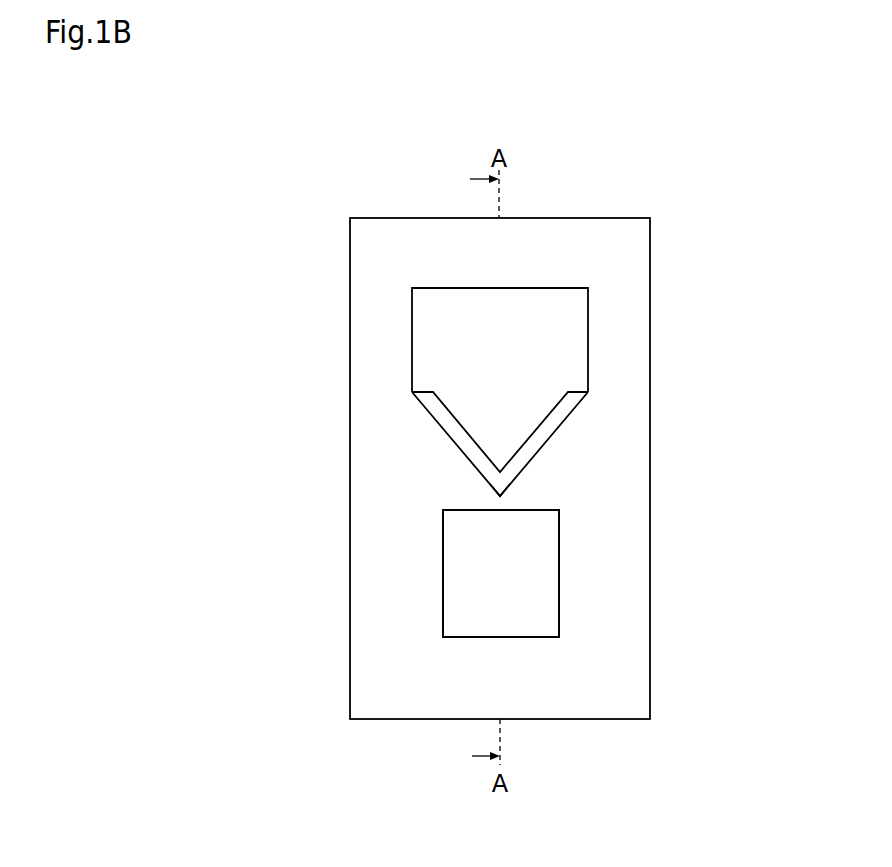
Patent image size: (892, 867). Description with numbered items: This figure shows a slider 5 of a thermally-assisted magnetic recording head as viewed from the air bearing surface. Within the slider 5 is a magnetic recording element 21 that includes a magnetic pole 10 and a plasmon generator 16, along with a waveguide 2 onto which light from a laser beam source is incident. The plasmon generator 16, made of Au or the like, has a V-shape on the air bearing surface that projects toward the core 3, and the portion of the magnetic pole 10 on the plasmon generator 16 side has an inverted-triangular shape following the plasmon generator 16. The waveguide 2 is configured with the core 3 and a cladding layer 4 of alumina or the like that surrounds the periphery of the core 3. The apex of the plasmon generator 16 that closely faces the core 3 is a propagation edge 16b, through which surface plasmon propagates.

The slider 5 is at (538, 427).
The magnetic recording element 21 is at (614, 285).
The magnetic pole 10 is at (575, 337).
The plasmon generator 16 is at (558, 418).
The propagation edge 16b is at (500, 496).
The cladding layer 4 is at (705, 590).
The core 3 is at (552, 585).
The waveguide 2 is at (592, 573).